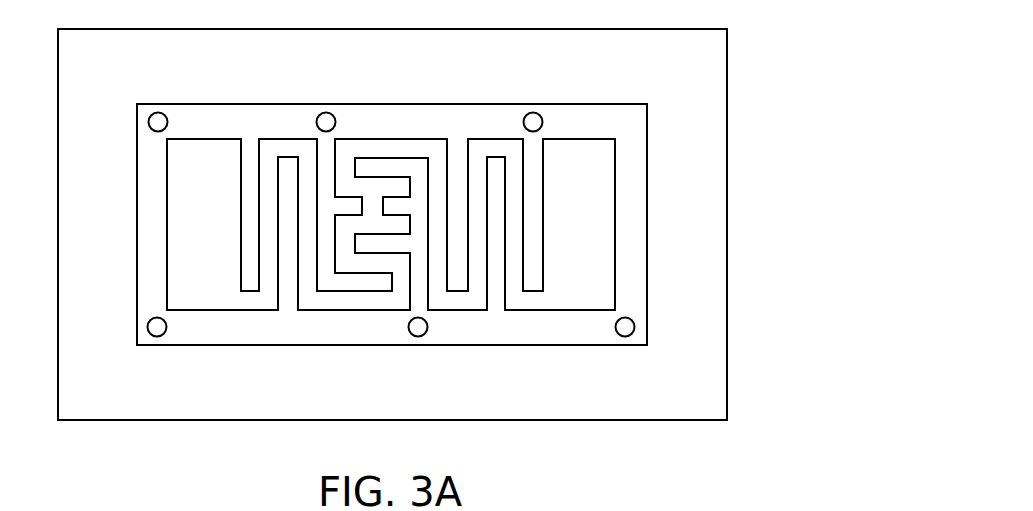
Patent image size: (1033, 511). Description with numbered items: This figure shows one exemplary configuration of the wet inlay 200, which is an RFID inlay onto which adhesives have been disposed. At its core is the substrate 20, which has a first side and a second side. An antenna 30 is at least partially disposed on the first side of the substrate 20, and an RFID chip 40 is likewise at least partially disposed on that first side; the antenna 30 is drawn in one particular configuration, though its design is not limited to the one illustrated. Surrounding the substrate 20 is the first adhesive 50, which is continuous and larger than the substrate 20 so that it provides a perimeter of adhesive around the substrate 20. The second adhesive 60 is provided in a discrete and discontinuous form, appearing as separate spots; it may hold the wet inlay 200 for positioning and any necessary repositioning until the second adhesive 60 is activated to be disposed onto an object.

The wet inlay 200 is at (452, 213).
The first adhesive 50 is at (77, 125).
The substrate 20 is at (157, 205).
The antenna 30 is at (578, 163).
The RFID chip 40 is at (372, 205).
The second adhesive 60 is at (159, 113).